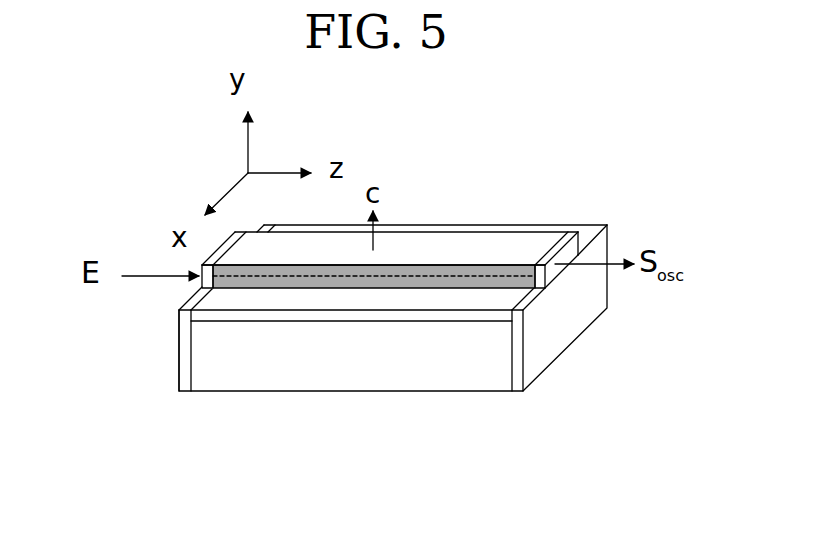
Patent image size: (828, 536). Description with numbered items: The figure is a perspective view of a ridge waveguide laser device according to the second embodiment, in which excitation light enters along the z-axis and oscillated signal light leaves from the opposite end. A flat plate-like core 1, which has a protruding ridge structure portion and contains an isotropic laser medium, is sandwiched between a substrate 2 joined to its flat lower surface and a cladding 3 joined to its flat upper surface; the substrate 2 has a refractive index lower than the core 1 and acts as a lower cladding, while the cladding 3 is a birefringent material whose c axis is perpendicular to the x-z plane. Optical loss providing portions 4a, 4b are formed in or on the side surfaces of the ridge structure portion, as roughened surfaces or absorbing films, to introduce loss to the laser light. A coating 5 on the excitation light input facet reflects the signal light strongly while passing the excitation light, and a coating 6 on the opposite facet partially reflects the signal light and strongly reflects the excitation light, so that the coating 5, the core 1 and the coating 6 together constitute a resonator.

The core 1 is at (396, 315).
The substrate 2 is at (282, 368).
The cladding 3 is at (522, 247).
The optical loss providing portion 4a is at (455, 268).
The optical loss providing portion 4b is at (553, 232).
The coating 5 is at (180, 318).
The coating 6 is at (567, 287).